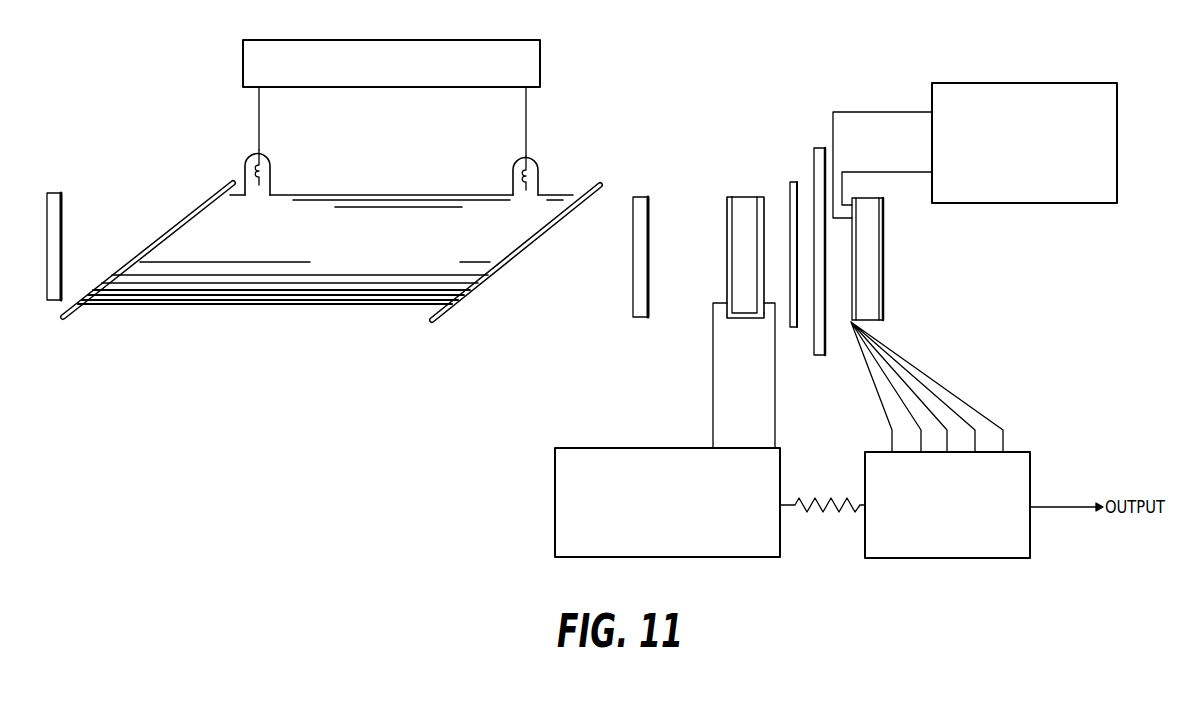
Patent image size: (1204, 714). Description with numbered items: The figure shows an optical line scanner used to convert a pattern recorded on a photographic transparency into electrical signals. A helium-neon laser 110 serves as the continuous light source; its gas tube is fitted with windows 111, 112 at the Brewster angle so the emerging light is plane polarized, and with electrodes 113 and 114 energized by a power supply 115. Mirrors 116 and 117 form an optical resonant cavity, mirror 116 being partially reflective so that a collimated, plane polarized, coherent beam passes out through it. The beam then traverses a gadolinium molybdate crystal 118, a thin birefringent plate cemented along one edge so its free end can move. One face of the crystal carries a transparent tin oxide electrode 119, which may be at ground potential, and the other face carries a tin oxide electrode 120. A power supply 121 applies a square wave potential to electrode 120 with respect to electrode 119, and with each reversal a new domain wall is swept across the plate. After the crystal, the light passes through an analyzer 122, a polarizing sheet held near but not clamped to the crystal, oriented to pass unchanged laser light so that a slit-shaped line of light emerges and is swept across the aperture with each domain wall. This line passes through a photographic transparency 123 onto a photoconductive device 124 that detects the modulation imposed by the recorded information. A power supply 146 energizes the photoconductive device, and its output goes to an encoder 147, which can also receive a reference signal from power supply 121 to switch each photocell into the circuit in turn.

The laser 110 is at (343, 298).
The window 111 is at (477, 287).
The window 112 is at (107, 285).
The electrode 113 is at (533, 164).
The electrode 114 is at (266, 158).
The power supply 115 is at (440, 40).
The mirror 116 is at (633, 205).
The mirror 117 is at (63, 200).
The gadolinium molybdate crystal 118 is at (744, 197).
The transparent electrode 119 is at (727, 205).
The electrode 120 is at (761, 207).
The power supply 121 is at (557, 472).
The analyzer 122 is at (795, 182).
The photographic transparency 123 is at (821, 148).
The photoconductive device 124 is at (881, 258).
The power supply for the photoconductor device 146 is at (1055, 83).
The encoder 147 is at (1030, 468).